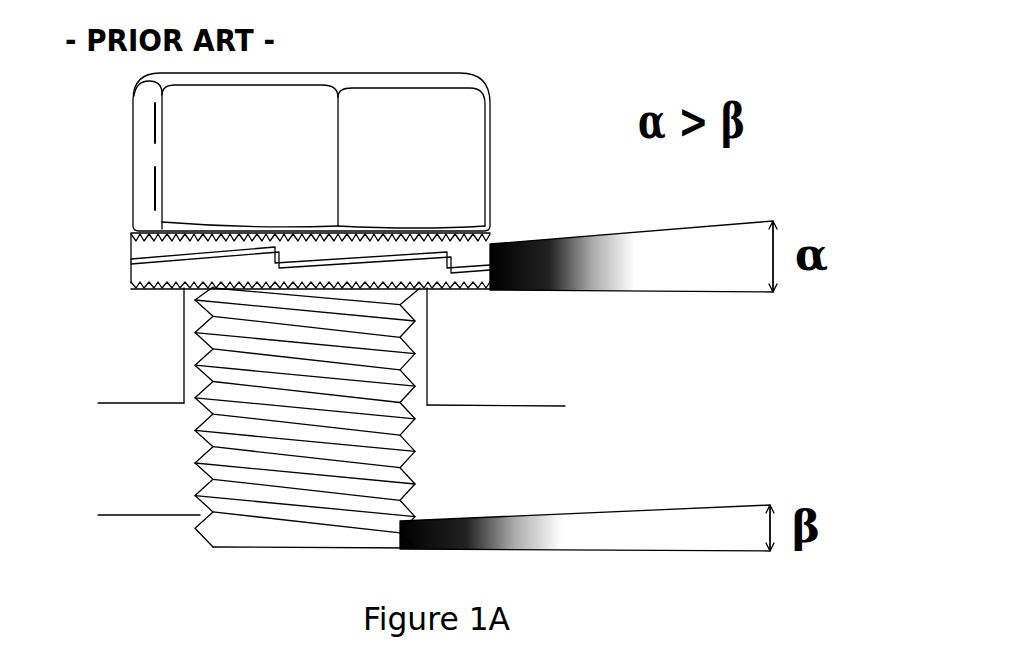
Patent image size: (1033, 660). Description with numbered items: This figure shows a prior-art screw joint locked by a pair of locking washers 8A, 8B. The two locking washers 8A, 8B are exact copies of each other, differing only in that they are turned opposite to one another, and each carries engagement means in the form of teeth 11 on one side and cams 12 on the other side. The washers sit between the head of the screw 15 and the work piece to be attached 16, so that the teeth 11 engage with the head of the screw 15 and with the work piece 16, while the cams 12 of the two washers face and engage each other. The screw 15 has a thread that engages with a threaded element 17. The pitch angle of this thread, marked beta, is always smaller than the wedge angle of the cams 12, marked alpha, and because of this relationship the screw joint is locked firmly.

The screw 15 is at (465, 132).
The cams 12 is at (208, 227).
The locking washer 8A is at (132, 237).
The locking washer 8B is at (131, 270).
The teeth 11 is at (153, 288).
The work piece to be attached 16 is at (331, 366).
The threaded element 17 is at (301, 476).